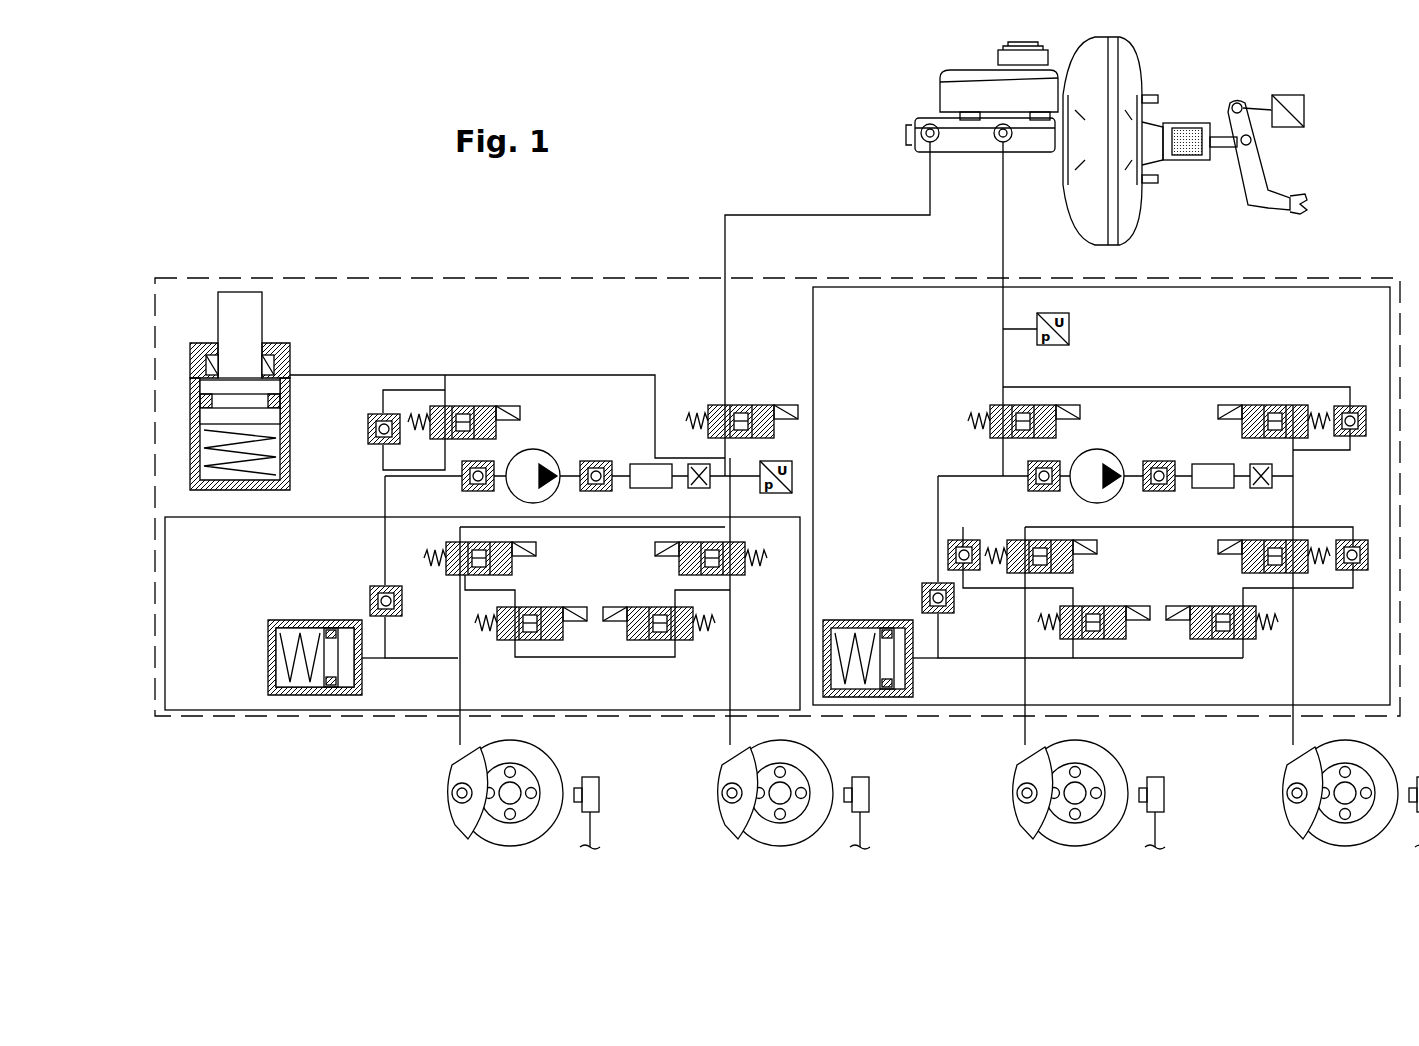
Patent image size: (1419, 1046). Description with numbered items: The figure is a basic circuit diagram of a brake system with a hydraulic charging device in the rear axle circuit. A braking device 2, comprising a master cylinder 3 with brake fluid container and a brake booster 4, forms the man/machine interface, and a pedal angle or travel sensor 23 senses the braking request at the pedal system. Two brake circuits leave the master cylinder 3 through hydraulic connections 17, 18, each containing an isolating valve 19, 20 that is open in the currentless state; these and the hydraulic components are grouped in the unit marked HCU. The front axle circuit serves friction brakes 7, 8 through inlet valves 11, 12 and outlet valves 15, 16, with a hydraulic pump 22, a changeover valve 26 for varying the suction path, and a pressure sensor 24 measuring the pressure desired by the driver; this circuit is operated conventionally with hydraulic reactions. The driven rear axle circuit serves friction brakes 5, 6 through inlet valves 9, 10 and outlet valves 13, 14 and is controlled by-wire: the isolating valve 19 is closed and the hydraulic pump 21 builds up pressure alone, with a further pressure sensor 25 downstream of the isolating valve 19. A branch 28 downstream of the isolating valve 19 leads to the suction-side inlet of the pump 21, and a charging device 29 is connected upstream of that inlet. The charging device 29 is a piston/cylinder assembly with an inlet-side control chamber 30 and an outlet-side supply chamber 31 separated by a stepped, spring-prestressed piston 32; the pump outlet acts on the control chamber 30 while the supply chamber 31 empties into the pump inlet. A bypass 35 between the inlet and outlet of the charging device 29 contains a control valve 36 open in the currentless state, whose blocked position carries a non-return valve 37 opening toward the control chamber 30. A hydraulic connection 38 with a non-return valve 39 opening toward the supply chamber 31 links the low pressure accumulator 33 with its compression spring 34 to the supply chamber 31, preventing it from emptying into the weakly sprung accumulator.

The braking device 2 is at (922, 82).
The master cylinder 3 is at (968, 152).
The brake booster 4 is at (1098, 72).
The hydraulic friction brake 5 is at (478, 815).
The friction brake 6 is at (745, 815).
The friction brake 7 is at (1040, 815).
The friction brake 8 is at (1310, 815).
The inlet valve 9 is at (462, 576).
The inlet valve 10 is at (736, 578).
The inlet valve 11 is at (1065, 560).
The inlet valve 12 is at (1238, 560).
The outlet valve 13 is at (540, 606).
The outlet valve 14 is at (652, 606).
The outlet valve 15 is at (1080, 605).
The outlet valve 16 is at (1230, 605).
The hydraulic connection 17 is at (828, 213).
The hydraulic connection 18 is at (1001, 246).
The isolating valve 19 is at (742, 404).
The isolating valve 20 is at (990, 438).
The hydraulic pump 21 is at (555, 490).
The hydraulic pump 22 is at (1115, 490).
The pedal angle sensor or travel sensor 23 is at (1304, 110).
The pressure sensor 24 is at (1070, 329).
The pressure sensor 25 is at (792, 477).
The changeover valve 26 is at (1232, 424).
The branch 28 is at (660, 445).
The charging device 29 is at (205, 330).
The control chamber 30 is at (190, 370).
The supply chamber 31 is at (190, 465).
The piston 32 is at (198, 396).
The low pressure accumulator 33 is at (262, 668).
The compression spring 34 is at (292, 640).
The bypass 35 is at (440, 468).
The control valve 36 is at (490, 438).
The non-return valve 37 is at (368, 432).
The hydraulic connection 38 is at (383, 546).
The non-return valve 39 is at (370, 602).
The hydraulic control unit HCU is at (1352, 275).